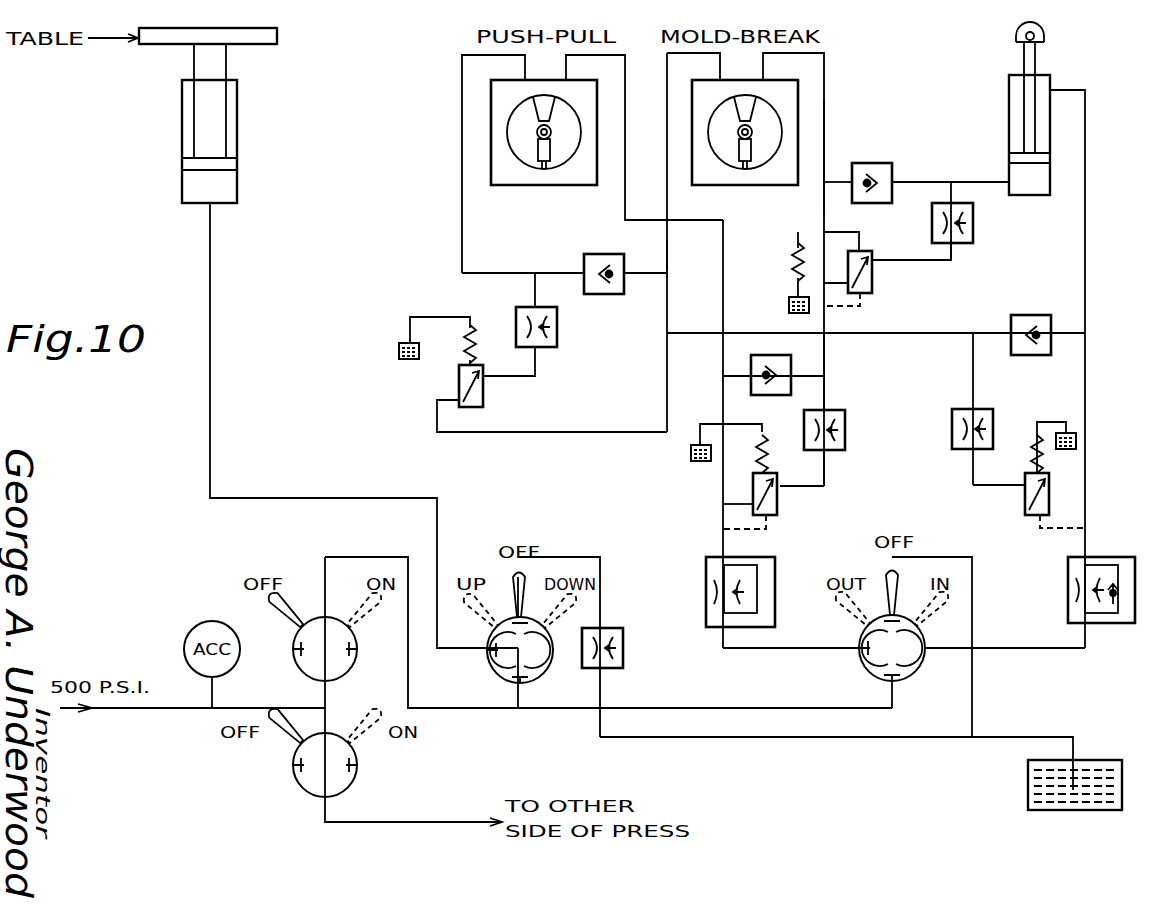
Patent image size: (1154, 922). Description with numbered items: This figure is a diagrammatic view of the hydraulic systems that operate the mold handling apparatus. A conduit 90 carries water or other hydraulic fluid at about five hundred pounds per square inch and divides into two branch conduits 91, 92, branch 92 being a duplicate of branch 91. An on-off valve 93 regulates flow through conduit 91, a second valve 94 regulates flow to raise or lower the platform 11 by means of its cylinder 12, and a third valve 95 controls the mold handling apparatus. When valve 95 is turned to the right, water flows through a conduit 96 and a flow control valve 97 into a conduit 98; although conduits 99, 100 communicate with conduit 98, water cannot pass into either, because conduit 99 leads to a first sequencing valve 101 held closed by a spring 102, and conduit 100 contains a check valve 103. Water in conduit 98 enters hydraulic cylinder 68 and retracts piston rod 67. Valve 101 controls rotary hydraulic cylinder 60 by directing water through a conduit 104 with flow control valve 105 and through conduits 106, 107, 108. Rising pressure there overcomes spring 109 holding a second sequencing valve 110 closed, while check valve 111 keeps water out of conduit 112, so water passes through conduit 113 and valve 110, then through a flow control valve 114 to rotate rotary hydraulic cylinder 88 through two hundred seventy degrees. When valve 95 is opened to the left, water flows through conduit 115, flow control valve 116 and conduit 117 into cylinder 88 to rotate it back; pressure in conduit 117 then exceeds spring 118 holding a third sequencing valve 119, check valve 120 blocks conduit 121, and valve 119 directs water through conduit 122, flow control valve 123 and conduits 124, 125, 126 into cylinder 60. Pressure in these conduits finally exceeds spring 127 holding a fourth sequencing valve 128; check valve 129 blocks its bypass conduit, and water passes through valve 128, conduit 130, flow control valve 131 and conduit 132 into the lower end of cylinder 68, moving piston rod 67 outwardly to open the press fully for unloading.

The platform 11 is at (268, 45).
The table cylinder 12 is at (218, 135).
The rotary hydraulic cylinder 60 is at (778, 127).
The piston rod 67 is at (1030, 60).
The hydraulic cylinder 68 is at (1009, 112).
The rotary hydraulic cylinder 88 is at (512, 135).
The conduit 90 is at (140, 710).
The branch conduit 91 is at (340, 690).
The branch conduit 92 is at (340, 715).
The on-off valve 93 is at (292, 672).
The second valve 94 is at (487, 672).
The third valve 95 is at (900, 690).
The conduit 96 is at (992, 648).
The flow control valve 97 is at (1110, 623).
The conduit 98 is at (1085, 380).
The conduit 99 is at (1070, 490).
The conduit 100 is at (1063, 333).
The first sequencing valve 101 is at (1025, 505).
The spring 102 is at (1033, 445).
The check valve 103 is at (1014, 300).
The conduit 104 is at (973, 470).
The flow control valve 105 is at (952, 432).
The conduit 106 is at (872, 333).
The conduit 107 is at (667, 318).
The conduit 108 is at (667, 250).
The spring 109 is at (468, 344).
The second sequencing valve 110 is at (482, 385).
The check valve 111 is at (604, 240).
The conduit 112 is at (570, 275).
The conduit 113 is at (607, 432).
The flow control valve 114 is at (516, 313).
The conduit 115 is at (762, 650).
The flow control valve 116 is at (706, 575).
The conduit 117 is at (723, 480).
The spring 118 is at (773, 390).
The third sequencing valve 119 is at (780, 510).
The check valve 120 is at (770, 355).
The conduit 121 is at (735, 392).
The conduit 122 is at (825, 470).
The flow control valve 123 is at (848, 418).
The conduit 124 is at (826, 326).
The conduit 125 is at (824, 205).
The conduit 126 is at (824, 130).
The spring 127 is at (795, 260).
The fourth sequencing valve 128 is at (872, 277).
The check valve 129 is at (872, 163).
The conduit 130 is at (951, 262).
The flow control valve 131 is at (973, 228).
The conduit 132 is at (975, 182).